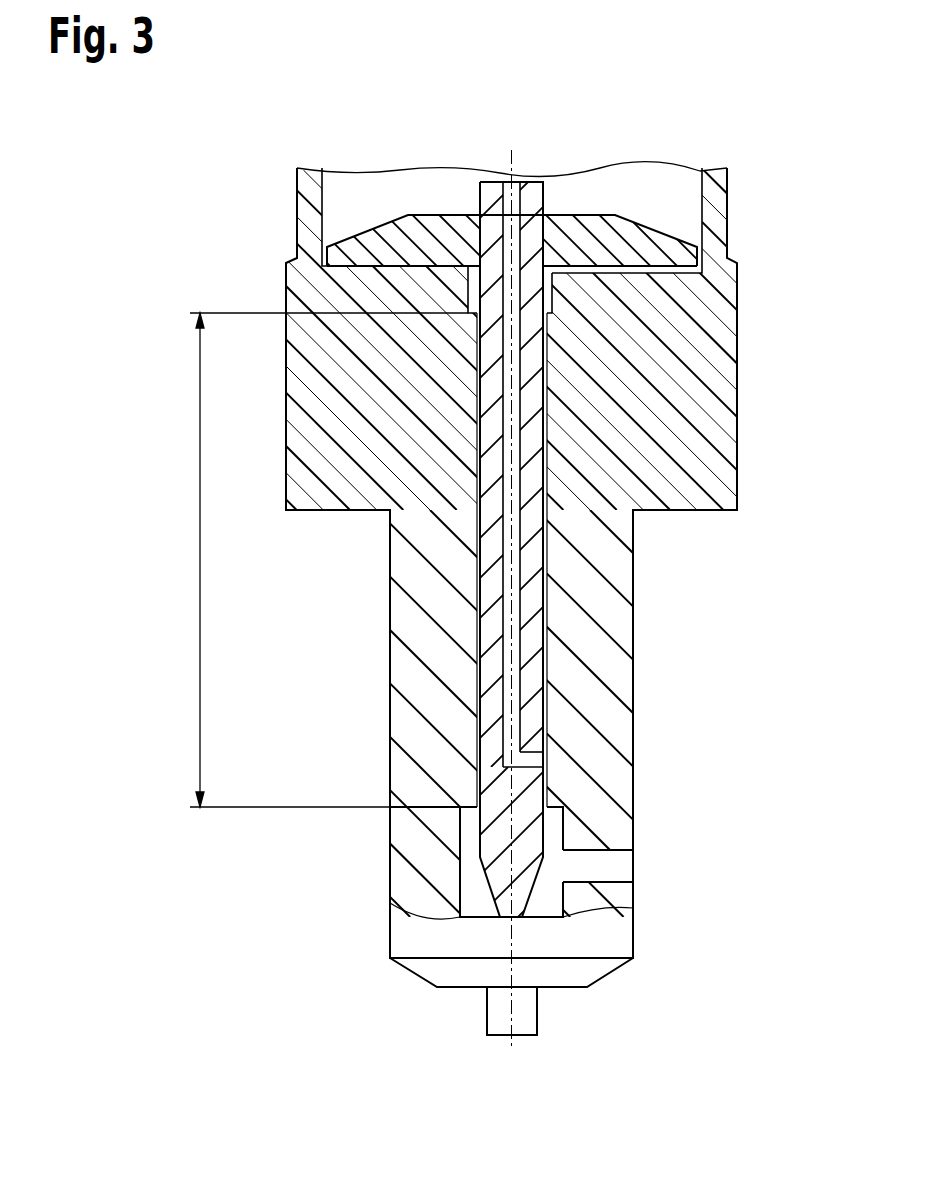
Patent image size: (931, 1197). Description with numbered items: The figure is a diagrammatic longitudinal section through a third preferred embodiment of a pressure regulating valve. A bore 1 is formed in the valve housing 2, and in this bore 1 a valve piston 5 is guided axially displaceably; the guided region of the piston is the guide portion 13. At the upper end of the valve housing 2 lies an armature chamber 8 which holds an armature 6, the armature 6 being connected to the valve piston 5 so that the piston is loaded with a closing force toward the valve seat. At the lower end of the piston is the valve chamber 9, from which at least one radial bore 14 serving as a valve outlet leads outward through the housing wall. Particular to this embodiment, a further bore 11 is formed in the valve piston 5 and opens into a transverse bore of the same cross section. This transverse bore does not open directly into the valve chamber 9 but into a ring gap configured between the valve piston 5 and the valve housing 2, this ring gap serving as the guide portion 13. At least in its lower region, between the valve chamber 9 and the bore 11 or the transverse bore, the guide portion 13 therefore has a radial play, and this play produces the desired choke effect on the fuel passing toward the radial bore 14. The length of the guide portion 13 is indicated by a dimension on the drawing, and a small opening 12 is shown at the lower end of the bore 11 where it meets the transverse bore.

The bore 1 is at (488, 632).
The valve housing 2 is at (493, 542).
The valve piston 5 is at (417, 630).
The armature 6 is at (637, 243).
The armature chamber 8 is at (374, 215).
The valve chamber 9 is at (473, 887).
The bore 11 is at (528, 759).
The transverse bore 12 is at (553, 790).
The guide portion 13 is at (200, 562).
The radial bore 14 is at (608, 864).